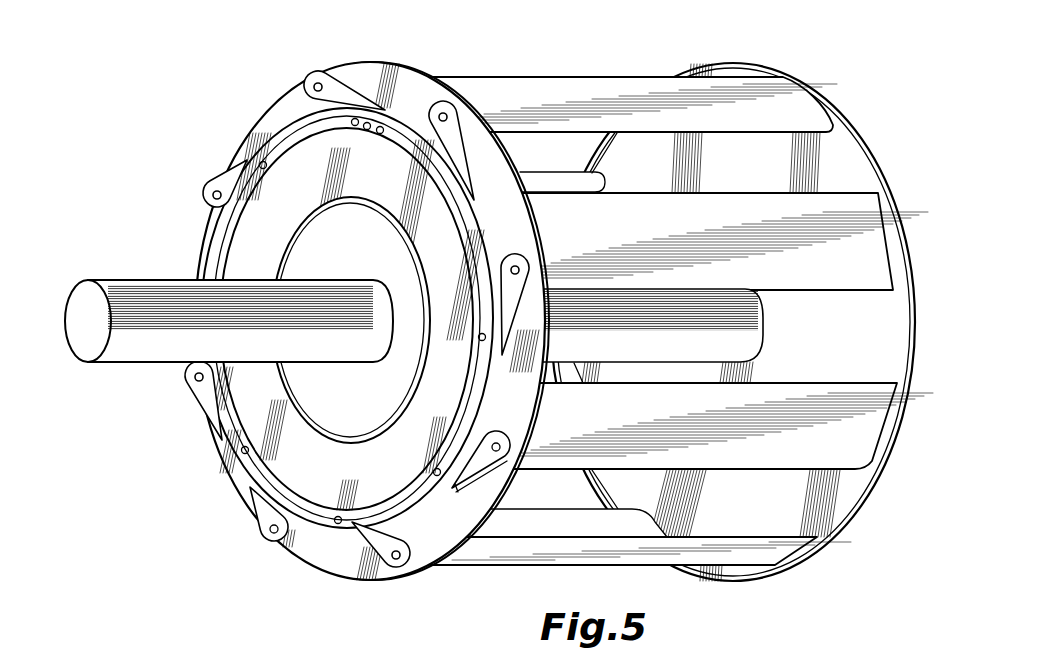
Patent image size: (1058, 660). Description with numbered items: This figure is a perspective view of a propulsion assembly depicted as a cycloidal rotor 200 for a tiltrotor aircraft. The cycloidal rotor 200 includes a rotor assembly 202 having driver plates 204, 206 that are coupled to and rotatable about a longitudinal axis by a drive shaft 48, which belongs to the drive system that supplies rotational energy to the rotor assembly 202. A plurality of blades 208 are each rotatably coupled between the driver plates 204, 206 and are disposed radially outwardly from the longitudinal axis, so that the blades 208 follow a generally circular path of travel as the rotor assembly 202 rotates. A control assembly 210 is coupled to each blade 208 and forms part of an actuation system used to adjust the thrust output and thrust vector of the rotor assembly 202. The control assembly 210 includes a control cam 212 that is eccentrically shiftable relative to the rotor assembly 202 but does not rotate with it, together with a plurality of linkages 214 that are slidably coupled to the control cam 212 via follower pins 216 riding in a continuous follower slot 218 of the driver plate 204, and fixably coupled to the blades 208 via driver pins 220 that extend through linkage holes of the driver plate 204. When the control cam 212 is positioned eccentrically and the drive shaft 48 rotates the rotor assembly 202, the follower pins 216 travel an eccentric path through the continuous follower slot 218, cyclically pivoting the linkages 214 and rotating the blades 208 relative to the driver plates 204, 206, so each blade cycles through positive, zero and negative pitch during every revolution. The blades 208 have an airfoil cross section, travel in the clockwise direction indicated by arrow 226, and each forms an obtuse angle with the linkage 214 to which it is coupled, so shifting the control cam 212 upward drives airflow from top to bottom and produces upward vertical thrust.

The cycloidal rotor 200 is at (499, 293).
The rotor assembly 202 is at (263, 106).
The driver plate 204 is at (362, 75).
The driver plate 206 is at (842, 147).
The blade 208 is at (840, 203).
The control assembly 210 is at (258, 412).
The control cam 212 is at (272, 467).
The linkage 214 is at (475, 477).
The follower pin 216 is at (430, 472).
The continuous follower slot 218 is at (280, 513).
The driver pin 220 is at (492, 432).
The arrow 226 is at (887, 372).
The drive shaft 48 is at (117, 282).